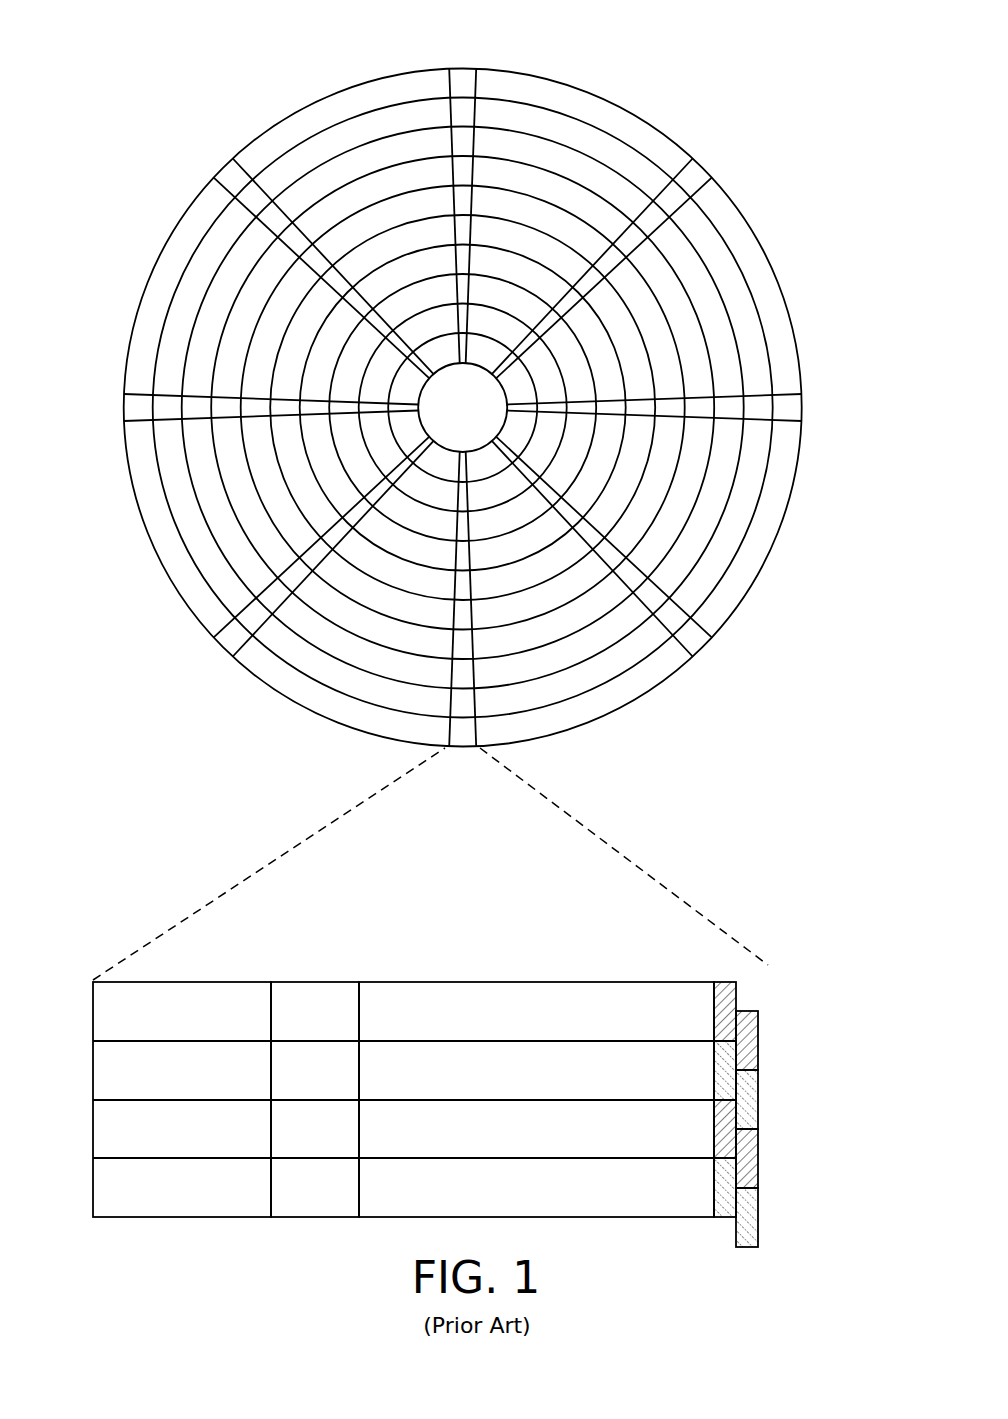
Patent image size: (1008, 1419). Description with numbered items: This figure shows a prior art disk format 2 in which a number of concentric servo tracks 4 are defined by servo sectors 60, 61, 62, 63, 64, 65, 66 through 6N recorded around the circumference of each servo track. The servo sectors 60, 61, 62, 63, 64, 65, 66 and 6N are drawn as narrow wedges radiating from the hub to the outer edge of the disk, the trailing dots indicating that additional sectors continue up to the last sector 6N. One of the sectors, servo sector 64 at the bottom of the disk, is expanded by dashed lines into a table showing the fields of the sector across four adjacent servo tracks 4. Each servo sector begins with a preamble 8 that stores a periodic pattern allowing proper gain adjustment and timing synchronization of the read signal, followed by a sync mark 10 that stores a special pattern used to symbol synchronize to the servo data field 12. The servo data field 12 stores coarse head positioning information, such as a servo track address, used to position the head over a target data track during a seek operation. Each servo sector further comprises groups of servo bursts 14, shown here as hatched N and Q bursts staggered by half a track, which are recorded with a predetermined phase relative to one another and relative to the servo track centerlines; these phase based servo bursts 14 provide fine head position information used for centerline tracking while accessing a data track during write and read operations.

The disk format 2 is at (205, 68).
The servo tracks 4 is at (578, 137).
The servo sector 60 is at (463, 82).
The servo sector 61 is at (694, 178).
The servo sector 62 is at (793, 409).
The servo sector 63 is at (694, 642).
The servo sector 64 is at (312, 822).
The servo sector 65 is at (236, 648).
The servo sector 66 is at (130, 406).
The servo sector 6N is at (231, 176).
The preamble 8 is at (190, 980).
The sync mark 10 is at (319, 980).
The servo data field 12 is at (523, 980).
The servo bursts 14 is at (754, 975).